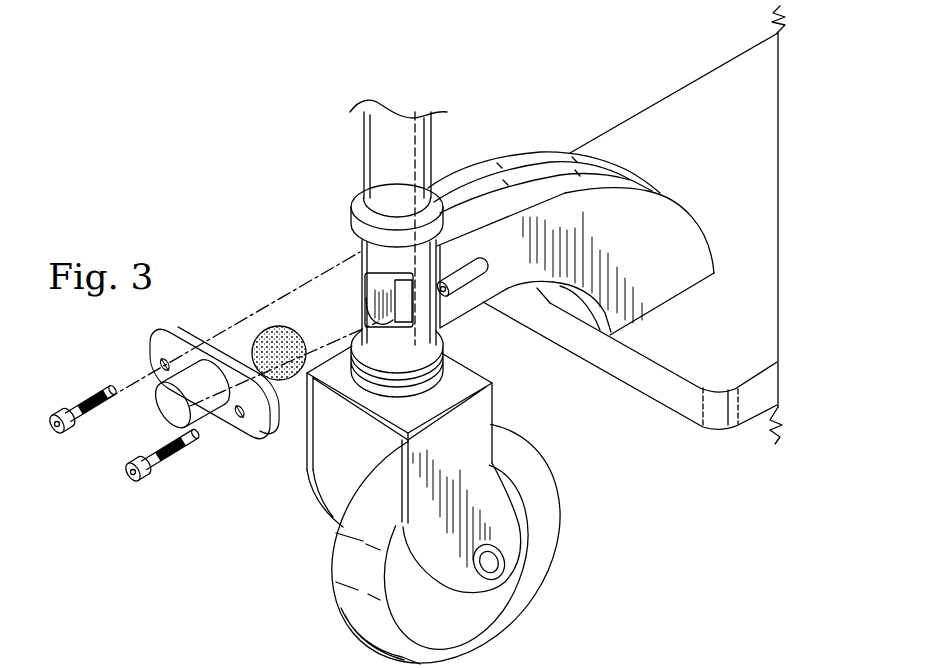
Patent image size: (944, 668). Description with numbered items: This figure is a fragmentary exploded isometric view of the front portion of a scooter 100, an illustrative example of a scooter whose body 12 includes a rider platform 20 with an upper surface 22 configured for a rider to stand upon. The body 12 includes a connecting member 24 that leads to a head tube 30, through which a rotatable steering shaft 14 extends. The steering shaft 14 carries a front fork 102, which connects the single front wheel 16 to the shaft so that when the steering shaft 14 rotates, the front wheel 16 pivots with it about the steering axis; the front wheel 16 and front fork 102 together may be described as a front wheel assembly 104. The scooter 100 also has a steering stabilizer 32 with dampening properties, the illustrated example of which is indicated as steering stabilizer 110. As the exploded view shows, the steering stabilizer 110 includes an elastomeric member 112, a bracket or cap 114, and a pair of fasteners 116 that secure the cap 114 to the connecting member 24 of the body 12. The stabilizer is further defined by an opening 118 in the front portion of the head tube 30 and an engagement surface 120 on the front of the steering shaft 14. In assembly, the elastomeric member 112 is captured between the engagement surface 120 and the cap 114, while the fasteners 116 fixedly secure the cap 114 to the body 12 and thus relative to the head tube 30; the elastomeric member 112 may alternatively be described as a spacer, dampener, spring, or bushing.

The scooter 100 is at (687, 34).
The body 12 is at (660, 80).
The upper surface 22 is at (707, 175).
The steering shaft 14 is at (375, 153).
The engagement surface 120 is at (370, 282).
The opening 118 is at (380, 313).
The head tube 30 is at (440, 243).
The connecting member 24 is at (533, 160).
The rider platform 20 is at (660, 407).
The front fork 102 is at (308, 472).
The front wheel 16 is at (558, 500).
The front wheel assembly 104 is at (328, 590).
The steering stabilizer 110 is at (229, 452).
The cap 114 is at (167, 407).
The fasteners 116 is at (140, 460).
The elastomeric member 112 is at (273, 327).
The steering stabilizer 32 is at (200, 460).